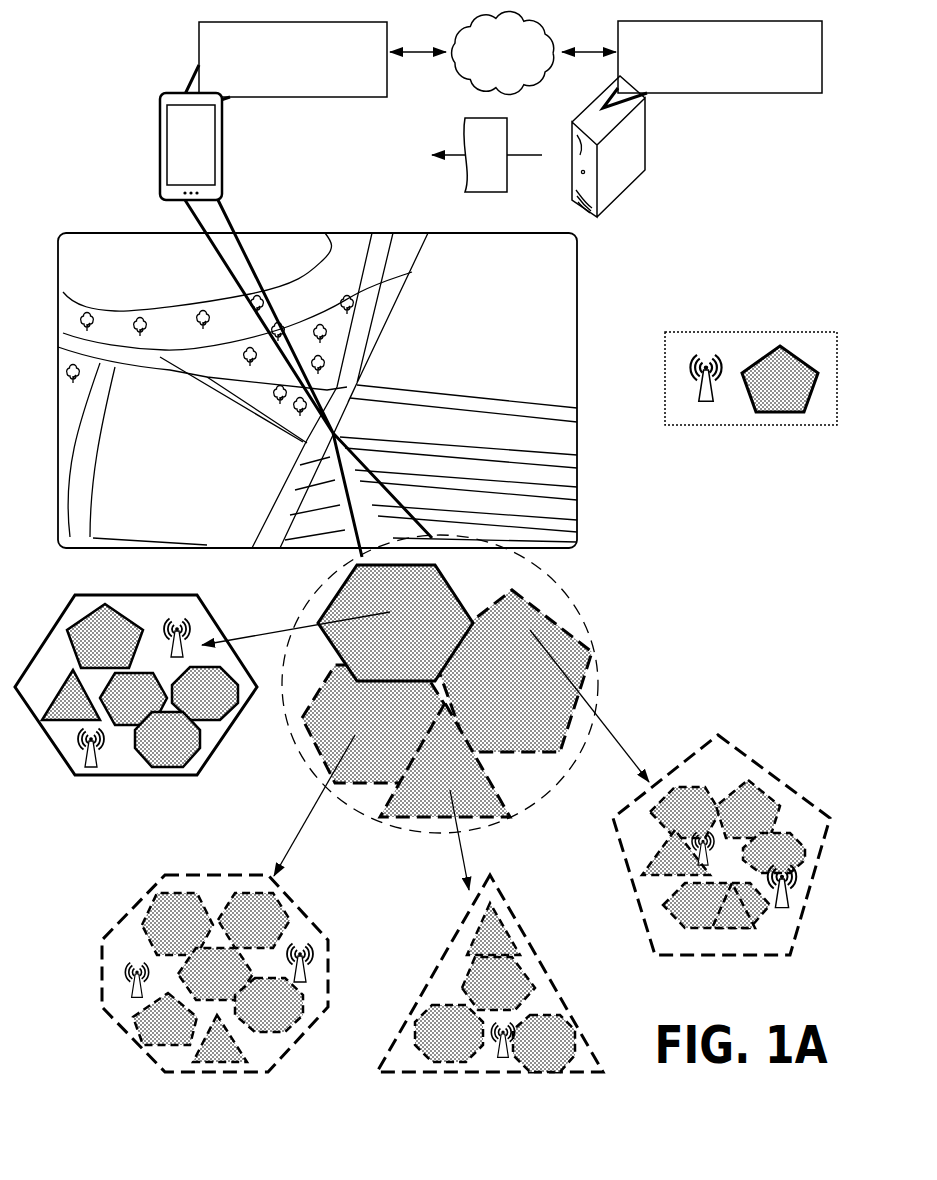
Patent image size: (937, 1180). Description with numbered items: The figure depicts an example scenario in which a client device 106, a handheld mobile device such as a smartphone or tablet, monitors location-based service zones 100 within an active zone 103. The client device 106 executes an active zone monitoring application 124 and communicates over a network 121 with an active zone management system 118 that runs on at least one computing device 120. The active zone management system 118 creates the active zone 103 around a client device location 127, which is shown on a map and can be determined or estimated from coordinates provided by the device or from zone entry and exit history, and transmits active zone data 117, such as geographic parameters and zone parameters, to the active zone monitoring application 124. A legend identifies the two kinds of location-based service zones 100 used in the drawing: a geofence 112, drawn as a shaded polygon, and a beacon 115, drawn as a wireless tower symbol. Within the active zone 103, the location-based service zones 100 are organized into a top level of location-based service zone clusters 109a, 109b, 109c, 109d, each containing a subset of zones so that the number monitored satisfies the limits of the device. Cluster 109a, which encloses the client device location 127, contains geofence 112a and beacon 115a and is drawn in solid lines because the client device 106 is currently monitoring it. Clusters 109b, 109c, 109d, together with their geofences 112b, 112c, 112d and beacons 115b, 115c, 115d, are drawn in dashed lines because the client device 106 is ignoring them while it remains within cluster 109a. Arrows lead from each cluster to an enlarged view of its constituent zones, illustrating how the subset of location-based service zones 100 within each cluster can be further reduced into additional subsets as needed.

The location-based service zones 100 is at (751, 382).
The active zone 103 is at (411, 684).
The client device 106 is at (160, 130).
The location-based service zone cluster 109a is at (413, 633).
The location-based service zone cluster 109b is at (352, 731).
The location-based service zone cluster 109c is at (428, 788).
The location-based service zone cluster 109d is at (494, 680).
The geofence 112 is at (767, 386).
The geofence 112a is at (87, 646).
The geofence 112b is at (159, 931).
The geofence 112c is at (432, 1043).
The geofence 112d is at (665, 823).
The beacon 115 is at (712, 358).
The beacon 115a is at (134, 701).
The beacon 115b is at (192, 973).
The beacon 115c is at (490, 988).
The beacon 115d is at (731, 856).
The active zone data 117 is at (494, 141).
The active zone management system 118 is at (707, 87).
The computing device 120 is at (635, 160).
The network 121 is at (517, 72).
The active zone monitoring application 124 is at (279, 87).
The client device location 127 is at (342, 428).